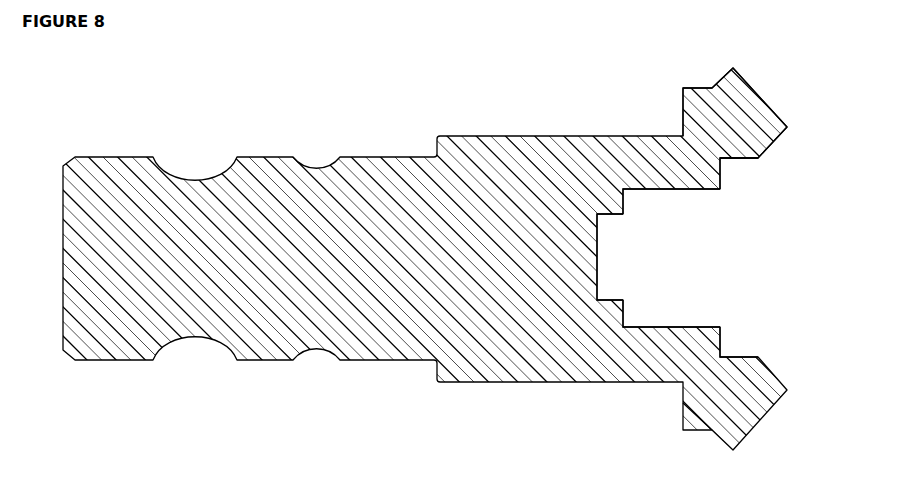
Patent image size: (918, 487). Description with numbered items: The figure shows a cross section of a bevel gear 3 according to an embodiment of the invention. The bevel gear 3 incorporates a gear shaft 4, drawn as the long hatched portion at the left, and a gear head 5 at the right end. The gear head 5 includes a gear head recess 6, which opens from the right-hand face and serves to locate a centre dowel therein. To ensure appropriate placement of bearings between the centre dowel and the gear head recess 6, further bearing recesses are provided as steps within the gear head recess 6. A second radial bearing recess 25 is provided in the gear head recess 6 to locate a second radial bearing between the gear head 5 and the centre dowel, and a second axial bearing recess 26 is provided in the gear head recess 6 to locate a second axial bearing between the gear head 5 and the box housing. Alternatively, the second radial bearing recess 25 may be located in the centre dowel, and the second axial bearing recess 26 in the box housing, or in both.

The bevel gear 3 is at (538, 118).
The gear shaft 4 is at (438, 198).
The gear head 5 is at (712, 135).
The gear head recess 6 is at (625, 258).
The second radial bearing recess 25 is at (643, 203).
The second axial bearing recess 26 is at (735, 180).